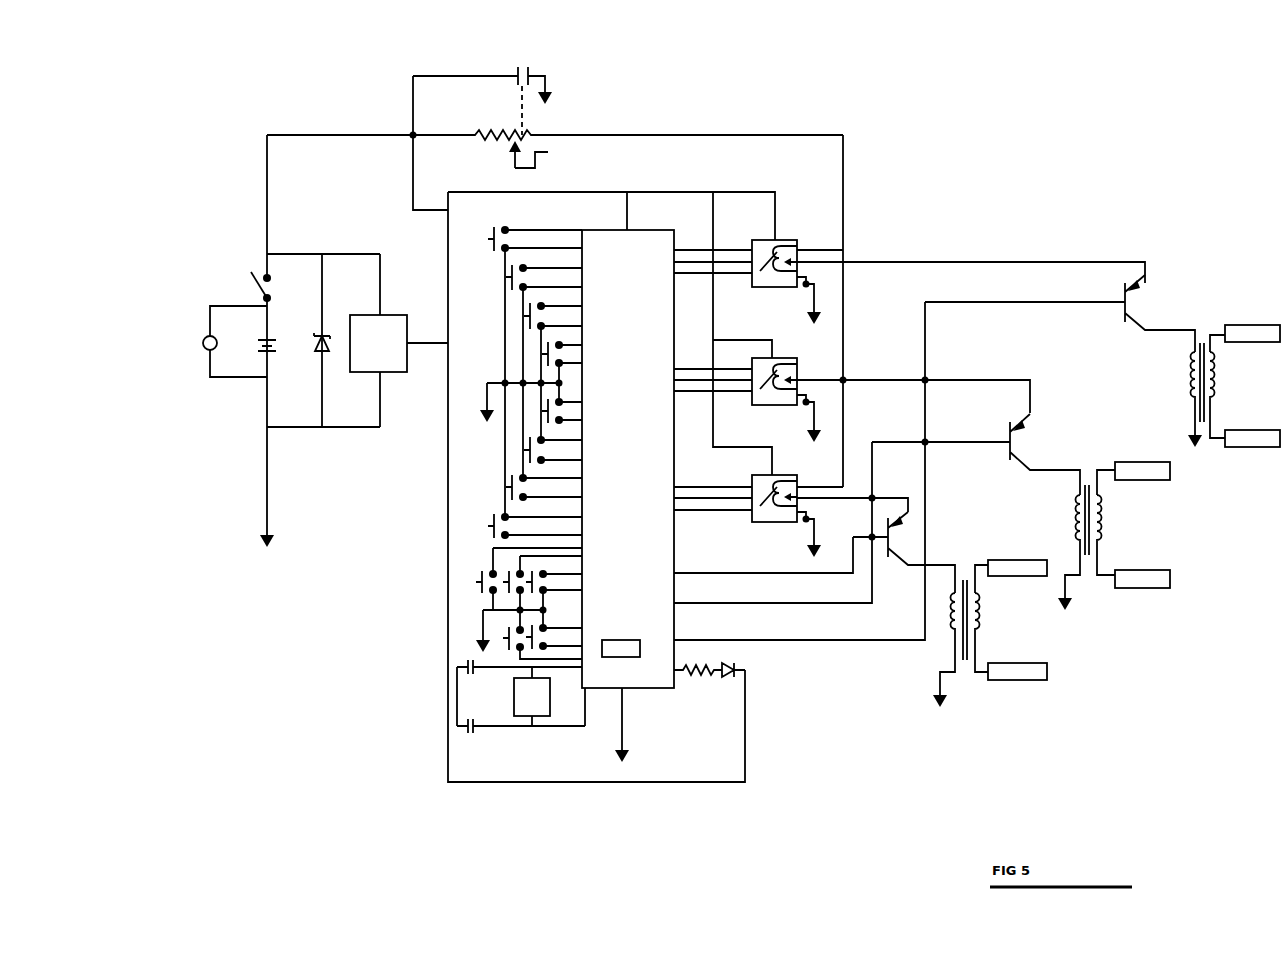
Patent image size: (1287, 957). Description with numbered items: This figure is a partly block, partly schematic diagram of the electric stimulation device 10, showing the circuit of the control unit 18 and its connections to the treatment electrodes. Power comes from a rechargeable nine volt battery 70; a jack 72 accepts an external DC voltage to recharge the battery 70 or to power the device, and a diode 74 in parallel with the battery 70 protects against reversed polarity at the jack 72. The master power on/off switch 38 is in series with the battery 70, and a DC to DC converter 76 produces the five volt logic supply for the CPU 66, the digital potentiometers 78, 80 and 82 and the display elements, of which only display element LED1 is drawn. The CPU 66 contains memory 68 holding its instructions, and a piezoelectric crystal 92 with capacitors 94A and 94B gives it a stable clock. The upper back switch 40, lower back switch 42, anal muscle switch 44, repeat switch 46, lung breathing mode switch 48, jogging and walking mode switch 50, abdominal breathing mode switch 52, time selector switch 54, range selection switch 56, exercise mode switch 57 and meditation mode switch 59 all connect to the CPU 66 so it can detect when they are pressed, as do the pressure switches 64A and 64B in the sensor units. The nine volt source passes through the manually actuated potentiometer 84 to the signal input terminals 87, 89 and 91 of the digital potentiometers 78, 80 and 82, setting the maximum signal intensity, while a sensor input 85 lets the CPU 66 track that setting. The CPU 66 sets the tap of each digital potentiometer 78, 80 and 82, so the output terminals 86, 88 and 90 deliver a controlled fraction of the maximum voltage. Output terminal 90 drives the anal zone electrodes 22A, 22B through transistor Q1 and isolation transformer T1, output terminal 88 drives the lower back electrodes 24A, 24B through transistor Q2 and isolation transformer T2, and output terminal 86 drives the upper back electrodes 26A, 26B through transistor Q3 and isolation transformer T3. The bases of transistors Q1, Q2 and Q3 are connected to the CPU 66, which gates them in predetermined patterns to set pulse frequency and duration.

The electric stimulation device 10 is at (253, 170).
The control unit 18 is at (890, 222).
The master power on/off switch 38 is at (250, 273).
The battery 70 is at (268, 337).
The jack 72 is at (214, 338).
The diode 74 is at (316, 351).
The DC to DC converter 76 is at (392, 374).
The upper back switch 40 is at (509, 239).
The lower back switch 42 is at (527, 277).
The anal muscle switch 44 is at (545, 316).
The repeat switch 46 is at (563, 354).
The lung breathing mode switch 48 is at (563, 411).
The jogging and walking mode switch 50 is at (545, 450).
The abdominal breathing mode switch 52 is at (527, 487).
The time selector switch 54 is at (509, 526).
The range selection switch 56 is at (547, 637).
The exercise mode switch 57 is at (547, 582).
The meditation mode switch 59 is at (480, 588).
The pressure switch 64A is at (526, 582).
The pressure switch 64B is at (510, 640).
The CPU 66 is at (628, 459).
The memory 68 is at (622, 637).
The digital potentiometer 78 is at (797, 282).
The digital potentiometer 80 is at (891, 400).
The digital potentiometer 82 is at (830, 516).
The manually actuated potentiometer 84 is at (538, 154).
The sensor input 85 is at (452, 76).
The output terminal 86 is at (803, 265).
The signal input terminal 87 is at (800, 243).
The output terminal 88 is at (803, 383).
The signal input terminal 89 is at (800, 361).
The output terminal 90 is at (803, 500).
The signal input terminal 91 is at (800, 478).
The piezoelectric crystal 92 is at (540, 718).
The capacitor 94A is at (474, 678).
The capacitor 94B is at (470, 736).
The anal zone electrode 22A is at (1015, 560).
The anal zone electrode 22B is at (1015, 680).
The lower back zone electrode 24A is at (1142, 588).
The lower back zone electrode 24B is at (1142, 462).
The upper back zone electrode 26A is at (1252, 325).
The upper back zone electrode 26B is at (1252, 447).
The transistor Q1 is at (921, 552).
The transistor Q2 is at (1045, 454).
The transistor Q3 is at (1160, 313).
The isolation transformer T1 is at (984, 612).
The isolation transformer T2 is at (1102, 520).
The isolation transformer T3 is at (1215, 378).
The display element LED1 is at (730, 661).